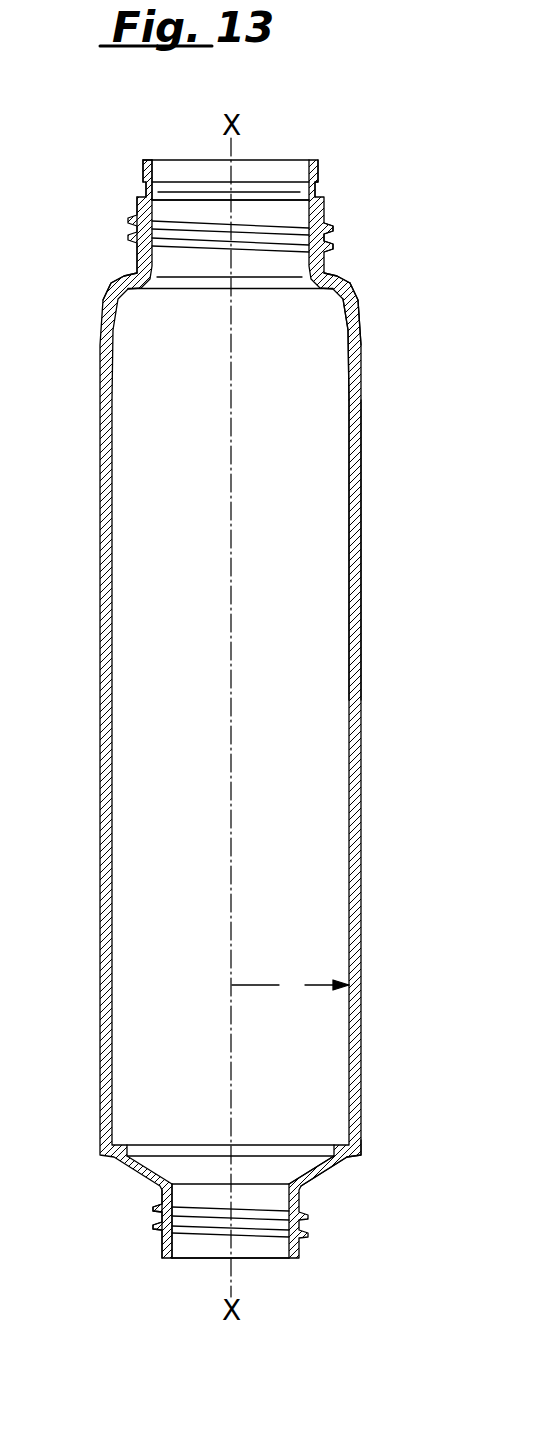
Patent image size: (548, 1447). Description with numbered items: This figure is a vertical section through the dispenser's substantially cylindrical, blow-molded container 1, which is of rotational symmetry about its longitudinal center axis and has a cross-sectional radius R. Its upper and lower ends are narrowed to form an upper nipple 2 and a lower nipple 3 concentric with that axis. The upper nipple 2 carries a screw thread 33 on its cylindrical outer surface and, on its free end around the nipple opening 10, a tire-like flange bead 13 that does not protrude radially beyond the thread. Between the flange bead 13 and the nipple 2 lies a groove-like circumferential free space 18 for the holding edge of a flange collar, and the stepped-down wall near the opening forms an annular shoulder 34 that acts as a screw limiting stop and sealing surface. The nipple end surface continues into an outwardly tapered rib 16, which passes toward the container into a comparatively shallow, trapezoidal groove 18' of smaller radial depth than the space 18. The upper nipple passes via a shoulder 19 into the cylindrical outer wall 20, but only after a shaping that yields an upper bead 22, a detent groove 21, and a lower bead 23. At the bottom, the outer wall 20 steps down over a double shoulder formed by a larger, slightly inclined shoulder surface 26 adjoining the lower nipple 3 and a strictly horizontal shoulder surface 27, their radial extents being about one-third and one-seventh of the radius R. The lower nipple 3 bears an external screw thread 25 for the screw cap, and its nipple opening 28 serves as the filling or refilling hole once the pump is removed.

The container 1 is at (100, 755).
The upper nipple 2 is at (135, 257).
The lower nipple 3 is at (163, 1198).
The nipple opening 10 is at (248, 213).
The flange bead 13 is at (155, 179).
The rib 16 is at (143, 173).
The free space 18 is at (88, 168).
The shallow groove 18' is at (87, 133).
The shoulder 19 is at (127, 273).
The outer wall 20 is at (360, 518).
The detent groove 21 is at (357, 307).
The upper bead 22 is at (347, 277).
The lower bead 23 is at (362, 328).
The external screw thread 25 is at (158, 1232).
The shoulder surface 26 is at (323, 1183).
The shoulder surface 27 is at (357, 1157).
The nipple opening 28 is at (203, 1245).
The screw thread 33 is at (330, 237).
The annular shoulder 34 is at (320, 200).
The cross-sectional radius R is at (290, 986).